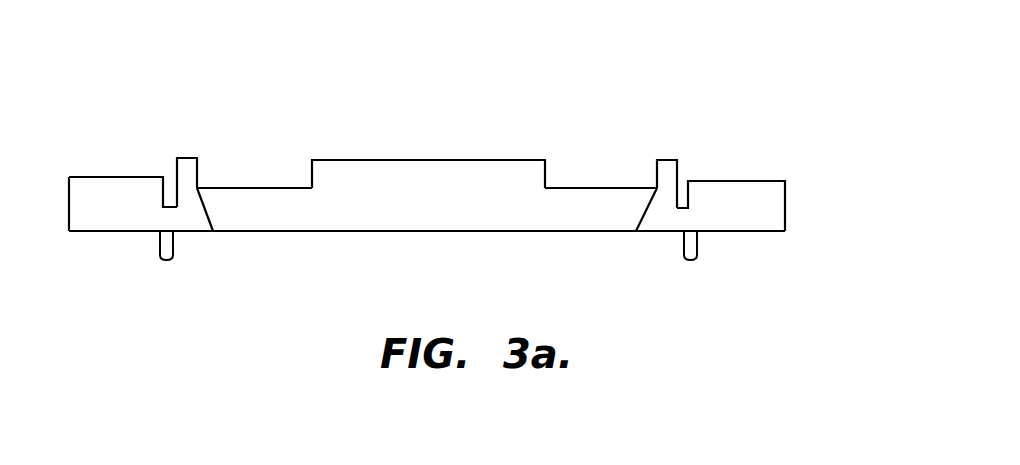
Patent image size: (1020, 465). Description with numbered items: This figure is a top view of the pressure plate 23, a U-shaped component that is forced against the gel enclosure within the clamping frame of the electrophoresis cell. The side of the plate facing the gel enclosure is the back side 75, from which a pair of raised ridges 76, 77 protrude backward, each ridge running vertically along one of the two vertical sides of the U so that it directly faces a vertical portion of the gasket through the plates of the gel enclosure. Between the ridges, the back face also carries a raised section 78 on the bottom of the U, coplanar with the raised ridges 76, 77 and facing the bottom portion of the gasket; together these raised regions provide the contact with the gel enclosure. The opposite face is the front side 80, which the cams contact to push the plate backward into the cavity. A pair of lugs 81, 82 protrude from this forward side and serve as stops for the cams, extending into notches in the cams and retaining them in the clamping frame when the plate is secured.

The pressure plate 23 is at (832, 46).
The back side 75 is at (588, 188).
The raised ridge 76 is at (187, 158).
The raised ridge 77 is at (665, 160).
The raised section 78 is at (405, 160).
The front side 80 is at (472, 232).
The lug 81 is at (157, 245).
The lug 82 is at (698, 247).